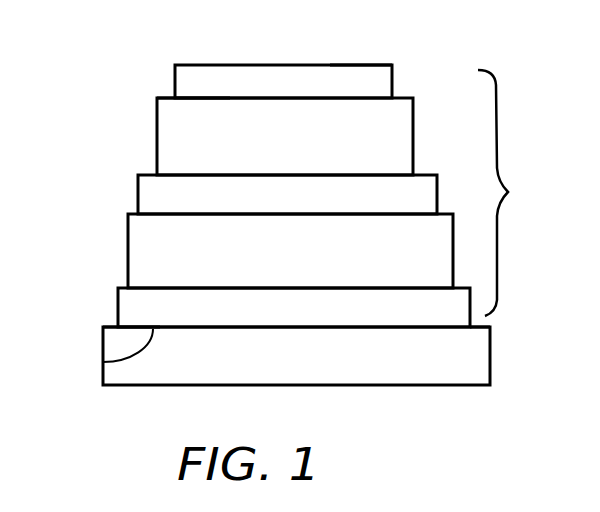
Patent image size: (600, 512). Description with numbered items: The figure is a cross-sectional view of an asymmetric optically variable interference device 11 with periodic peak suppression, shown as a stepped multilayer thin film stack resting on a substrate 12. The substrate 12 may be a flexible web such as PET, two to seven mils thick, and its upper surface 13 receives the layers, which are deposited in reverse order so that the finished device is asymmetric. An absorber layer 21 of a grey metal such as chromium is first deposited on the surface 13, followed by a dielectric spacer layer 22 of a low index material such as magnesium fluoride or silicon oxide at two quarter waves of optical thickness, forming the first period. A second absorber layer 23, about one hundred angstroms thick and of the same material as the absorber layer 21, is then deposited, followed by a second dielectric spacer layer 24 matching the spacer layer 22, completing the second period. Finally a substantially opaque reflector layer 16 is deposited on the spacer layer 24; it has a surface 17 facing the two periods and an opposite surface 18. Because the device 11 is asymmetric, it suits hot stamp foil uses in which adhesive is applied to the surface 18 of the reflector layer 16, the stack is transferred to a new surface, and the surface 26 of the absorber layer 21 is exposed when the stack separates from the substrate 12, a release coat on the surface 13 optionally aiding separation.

The optically variable interference device 11 is at (514, 193).
The substrate 12 is at (468, 367).
The surface of the substrate 13 is at (481, 324).
The reflector layer 16 is at (177, 88).
The surface of the reflector layer 17 is at (185, 101).
The surface of the reflector layer 18 is at (343, 64).
The absorber layer 1 21 is at (135, 308).
The dielectric spacer layer 1 22 is at (150, 252).
The absorber layer 2 23 is at (152, 197).
The dielectric spacer layer 2 24 is at (163, 153).
The surface of the absorber layer 26 is at (103, 362).